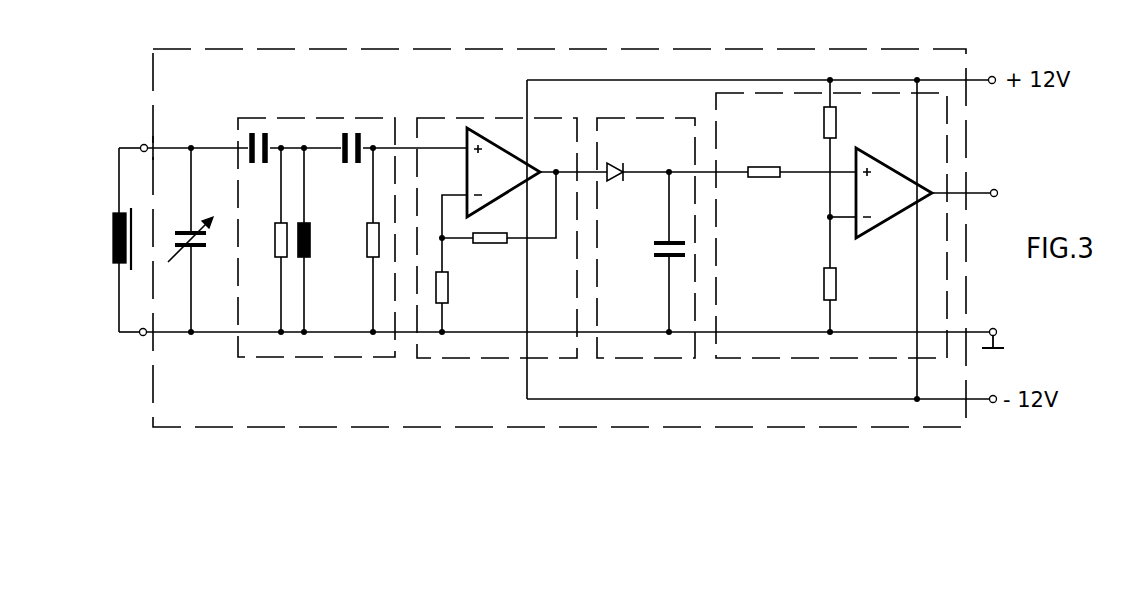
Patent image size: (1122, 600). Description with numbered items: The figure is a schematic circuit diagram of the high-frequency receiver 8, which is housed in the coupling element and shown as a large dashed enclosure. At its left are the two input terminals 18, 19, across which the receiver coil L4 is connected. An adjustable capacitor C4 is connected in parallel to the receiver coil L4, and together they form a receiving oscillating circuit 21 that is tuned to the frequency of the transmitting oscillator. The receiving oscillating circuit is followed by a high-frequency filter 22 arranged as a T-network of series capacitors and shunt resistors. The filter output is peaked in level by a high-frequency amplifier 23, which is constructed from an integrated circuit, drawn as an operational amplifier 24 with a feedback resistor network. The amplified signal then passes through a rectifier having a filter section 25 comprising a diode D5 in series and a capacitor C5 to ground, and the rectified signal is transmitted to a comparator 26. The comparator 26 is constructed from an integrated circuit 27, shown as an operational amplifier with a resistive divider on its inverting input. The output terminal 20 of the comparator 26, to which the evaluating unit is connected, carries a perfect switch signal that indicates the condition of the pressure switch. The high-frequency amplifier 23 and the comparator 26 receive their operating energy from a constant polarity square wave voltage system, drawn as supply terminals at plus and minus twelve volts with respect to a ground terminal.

The high-frequency receiver 8 is at (553, 50).
The input terminal 18 is at (141, 146).
The input terminal 19 is at (144, 337).
The output terminal 20 is at (999, 190).
The receiving oscillating circuit 21 is at (157, 143).
The high-frequency filter 22 is at (330, 118).
The high-frequency amplifier 23 is at (512, 222).
The operational amplifier 24 is at (492, 152).
The filter section 25 is at (672, 222).
The comparator 26 is at (853, 206).
The integrated circuit 27 is at (882, 136).
The receiver coil L4 is at (113, 237).
The capacitor C4 is at (182, 232).
The diode D5 is at (628, 141).
The capacitor C5 is at (665, 238).